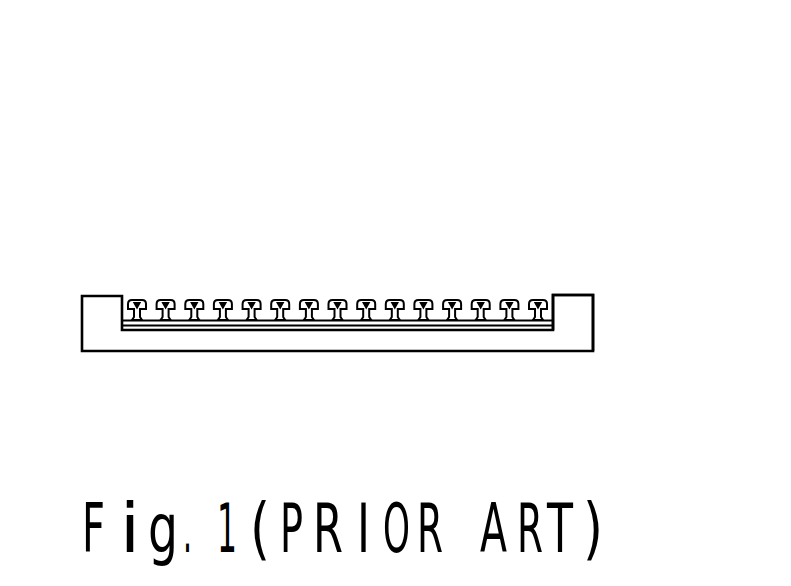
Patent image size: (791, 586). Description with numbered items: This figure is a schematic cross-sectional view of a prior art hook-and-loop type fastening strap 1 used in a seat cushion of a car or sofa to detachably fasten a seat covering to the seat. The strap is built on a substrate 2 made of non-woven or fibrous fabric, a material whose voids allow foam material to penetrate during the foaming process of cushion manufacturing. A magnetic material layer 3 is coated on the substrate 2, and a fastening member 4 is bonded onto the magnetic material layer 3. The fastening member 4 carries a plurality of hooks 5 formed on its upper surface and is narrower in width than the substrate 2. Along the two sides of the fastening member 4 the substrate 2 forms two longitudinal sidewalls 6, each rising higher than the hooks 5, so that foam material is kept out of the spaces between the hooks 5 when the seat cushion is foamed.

The hook-and-loop type fastening strap 1 is at (267, 179).
The substrate 2 is at (543, 343).
The magnetic material layer 3 is at (470, 322).
The fastening member 4 is at (407, 318).
The hooks 5 is at (479, 322).
The longitudinal sidewalls 6 is at (575, 303).